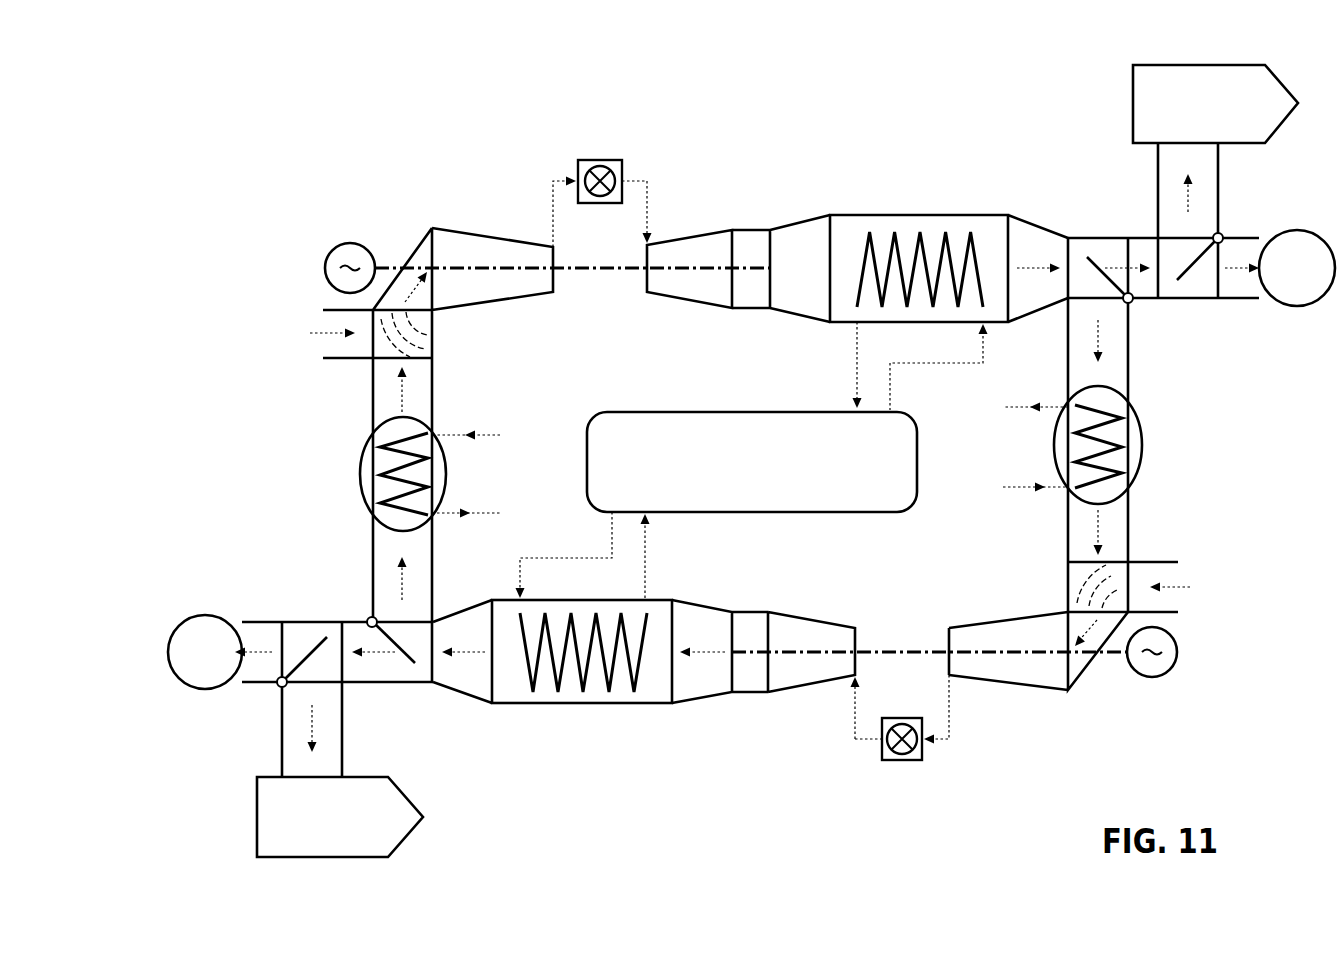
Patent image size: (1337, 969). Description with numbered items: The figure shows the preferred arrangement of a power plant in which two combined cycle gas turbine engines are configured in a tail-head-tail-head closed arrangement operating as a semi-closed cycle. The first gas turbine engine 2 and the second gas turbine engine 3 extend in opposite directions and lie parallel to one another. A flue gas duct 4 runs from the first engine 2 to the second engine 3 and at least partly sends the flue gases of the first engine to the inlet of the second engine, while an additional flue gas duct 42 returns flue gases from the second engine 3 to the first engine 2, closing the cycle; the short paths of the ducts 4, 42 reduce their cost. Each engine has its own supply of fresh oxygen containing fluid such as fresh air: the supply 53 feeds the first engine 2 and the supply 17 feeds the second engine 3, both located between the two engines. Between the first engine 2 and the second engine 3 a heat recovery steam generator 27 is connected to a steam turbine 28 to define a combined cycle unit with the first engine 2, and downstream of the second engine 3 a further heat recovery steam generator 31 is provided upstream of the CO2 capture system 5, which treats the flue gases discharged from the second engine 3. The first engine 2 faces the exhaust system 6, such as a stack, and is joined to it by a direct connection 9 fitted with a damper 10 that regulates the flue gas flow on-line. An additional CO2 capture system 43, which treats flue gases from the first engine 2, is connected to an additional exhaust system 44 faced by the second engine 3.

The first gas turbine engine 2 is at (600, 126).
The second gas turbine engine 3 is at (903, 795).
The flue gas duct 4 is at (1118, 355).
The CO2 capture system 5 is at (319, 830).
The exhaust system 6 is at (196, 666).
The direct connection 9 is at (268, 630).
The damper 10 is at (313, 645).
The supply of fresh oxygen containing fluid 17 is at (1162, 573).
The heat recovery steam generator 27 is at (904, 233).
The steam turbine 28 is at (735, 474).
The heat recovery steam generator 31 is at (595, 685).
The additional flue gas duct 42 is at (387, 572).
The additional CO2 capture system 43 is at (1190, 112).
The additional exhaust system 44 is at (1280, 282).
The supply of fresh oxygen containing fluid 53 is at (333, 350).